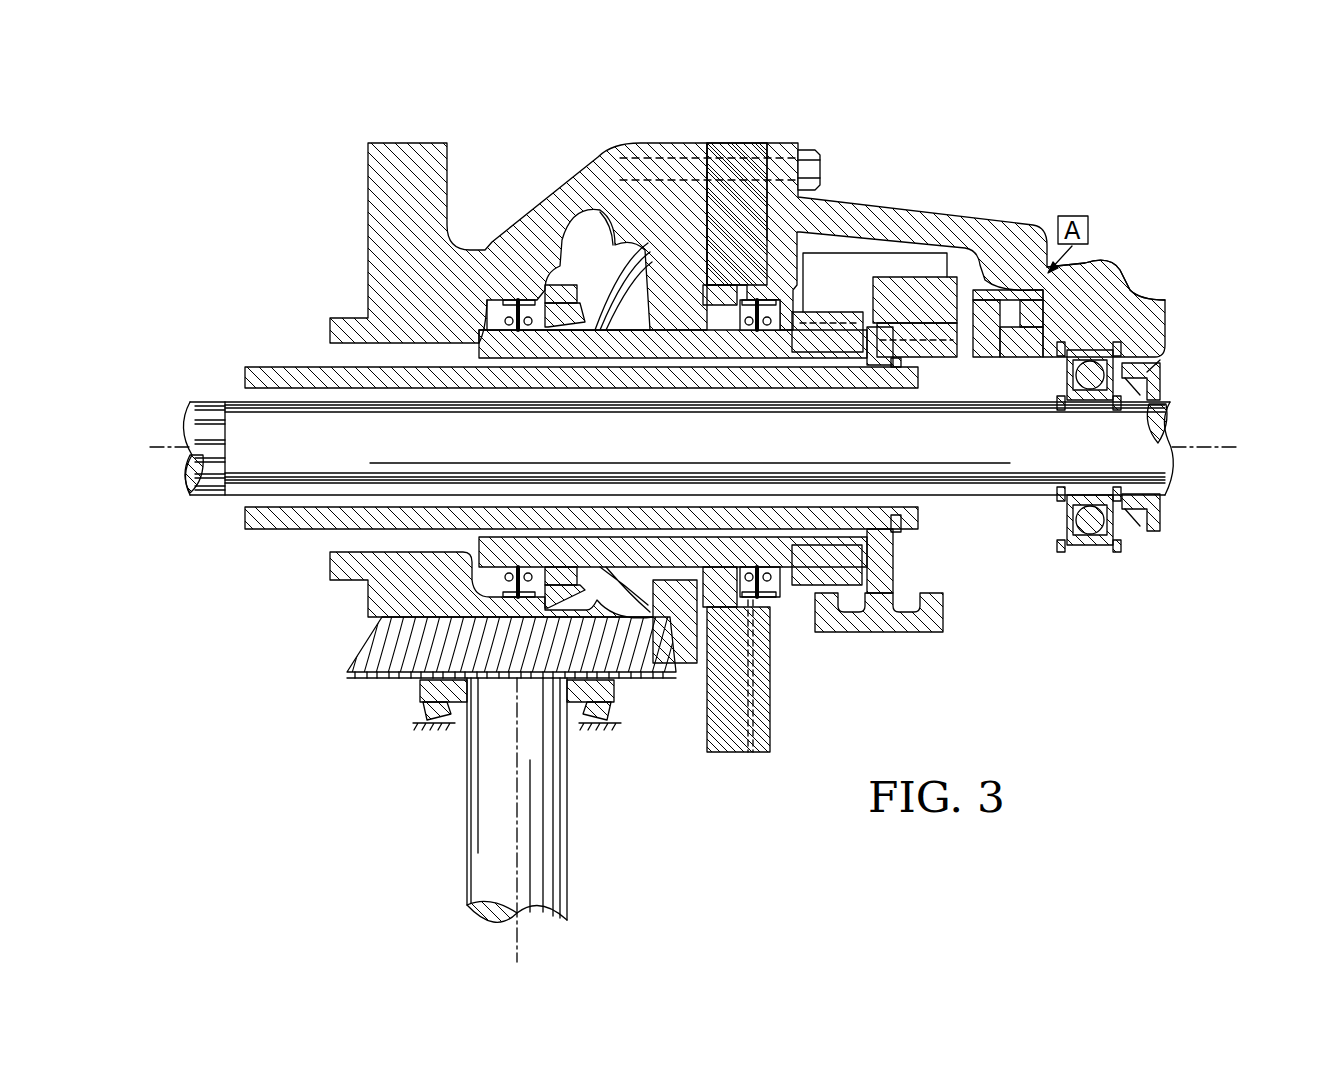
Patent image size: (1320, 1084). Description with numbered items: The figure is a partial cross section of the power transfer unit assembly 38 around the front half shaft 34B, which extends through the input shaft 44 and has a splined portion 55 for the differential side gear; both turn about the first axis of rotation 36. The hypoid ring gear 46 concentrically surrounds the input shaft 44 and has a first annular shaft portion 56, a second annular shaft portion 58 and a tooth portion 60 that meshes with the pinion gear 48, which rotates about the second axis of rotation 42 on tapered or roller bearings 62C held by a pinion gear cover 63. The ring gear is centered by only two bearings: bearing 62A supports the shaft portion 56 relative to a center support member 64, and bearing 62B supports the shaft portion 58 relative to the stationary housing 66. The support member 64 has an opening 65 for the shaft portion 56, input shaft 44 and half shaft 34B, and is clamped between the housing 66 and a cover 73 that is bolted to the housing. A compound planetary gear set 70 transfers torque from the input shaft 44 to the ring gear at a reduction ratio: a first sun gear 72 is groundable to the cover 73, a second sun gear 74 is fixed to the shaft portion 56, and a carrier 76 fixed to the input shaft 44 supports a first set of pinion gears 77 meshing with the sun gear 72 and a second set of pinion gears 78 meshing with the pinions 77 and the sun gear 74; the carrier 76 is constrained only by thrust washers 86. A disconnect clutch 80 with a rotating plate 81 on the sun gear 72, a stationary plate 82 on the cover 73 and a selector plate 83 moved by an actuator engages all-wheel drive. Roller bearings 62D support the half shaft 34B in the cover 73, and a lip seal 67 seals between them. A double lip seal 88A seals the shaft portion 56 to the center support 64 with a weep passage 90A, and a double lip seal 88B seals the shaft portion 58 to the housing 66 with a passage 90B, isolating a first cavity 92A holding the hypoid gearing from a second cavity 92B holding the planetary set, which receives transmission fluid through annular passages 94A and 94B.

The half shaft 34B is at (235, 400).
The first axis of rotation 36 is at (1208, 447).
The power transfer unit assembly 38 is at (1190, 237).
The second axis of rotation 42 is at (517, 947).
The input shaft 44 is at (292, 368).
The hypoid ring gear 46 is at (725, 262).
The pinion gear 48 is at (357, 647).
The splined portion 55 is at (203, 402).
The first annular shaft portion 56 is at (795, 313).
The second annular shaft portion 58 is at (493, 327).
The tooth portion 60 is at (605, 247).
The bearing 62A is at (821, 188).
The bearing 62B is at (560, 315).
The tapered or roller bearings 62C is at (420, 713).
The roller bearings 62D is at (1090, 547).
The pinion gear cover 63 is at (423, 733).
The center support member 64 is at (742, 143).
The opening 65 is at (835, 240).
The stationary housing 66 is at (505, 232).
The lip seal 67 is at (1150, 380).
The compound planetary gear set 70 is at (1000, 230).
The first sun gear 72 is at (953, 360).
The cover 73 is at (985, 212).
The second sun gear 74 is at (922, 263).
The carrier 76 is at (930, 632).
The first set of pinion gears 77 is at (930, 313).
The second set of pinion gears 78 is at (953, 267).
The disconnect clutch 80 is at (1050, 277).
The rotating plate 81 is at (985, 325).
The stationary plate 82 is at (1010, 313).
The selector plate 83 is at (1045, 300).
The axial thrust bearings or washers 86 is at (897, 532).
The annular double lip seal 88A is at (777, 335).
The annular double lip seal 88B is at (508, 300).
The passage 90A is at (767, 690).
The passage 90B is at (538, 245).
The first cavity 92A is at (585, 330).
The second cavity 92B is at (835, 335).
The annular passage 94A is at (490, 363).
The annular passage 94B is at (420, 393).